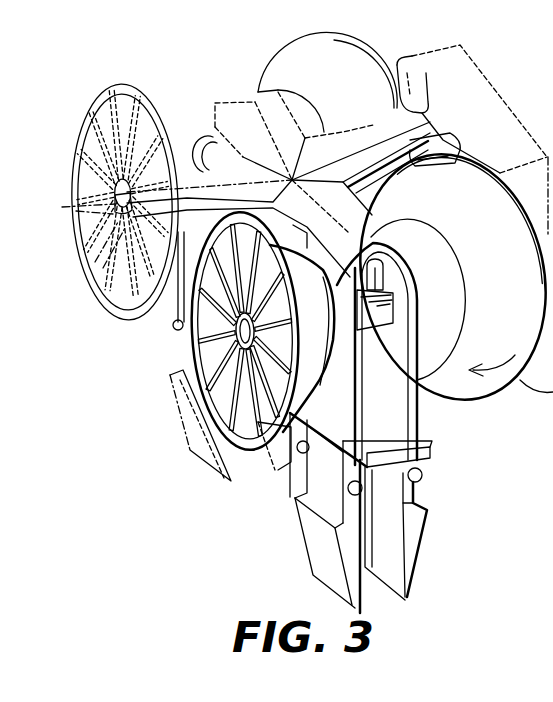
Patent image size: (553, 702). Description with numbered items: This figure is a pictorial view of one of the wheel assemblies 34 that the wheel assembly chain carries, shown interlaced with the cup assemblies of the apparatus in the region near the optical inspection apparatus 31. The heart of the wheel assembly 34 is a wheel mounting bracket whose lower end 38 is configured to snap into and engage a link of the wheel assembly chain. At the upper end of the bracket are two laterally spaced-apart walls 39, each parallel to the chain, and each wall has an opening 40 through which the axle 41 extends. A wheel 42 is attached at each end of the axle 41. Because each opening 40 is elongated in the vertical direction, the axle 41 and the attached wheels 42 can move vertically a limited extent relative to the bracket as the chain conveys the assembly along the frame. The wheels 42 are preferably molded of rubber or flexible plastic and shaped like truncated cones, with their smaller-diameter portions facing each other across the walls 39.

The optical inspection apparatus 31 is at (400, 334).
The wheel assembly 34 is at (498, 355).
The lower end of the wheel mounting bracket 38 is at (430, 543).
The walls 39 is at (420, 415).
The opening 40 is at (341, 372).
The axle 41 is at (381, 262).
The wheel 42 is at (252, 452).